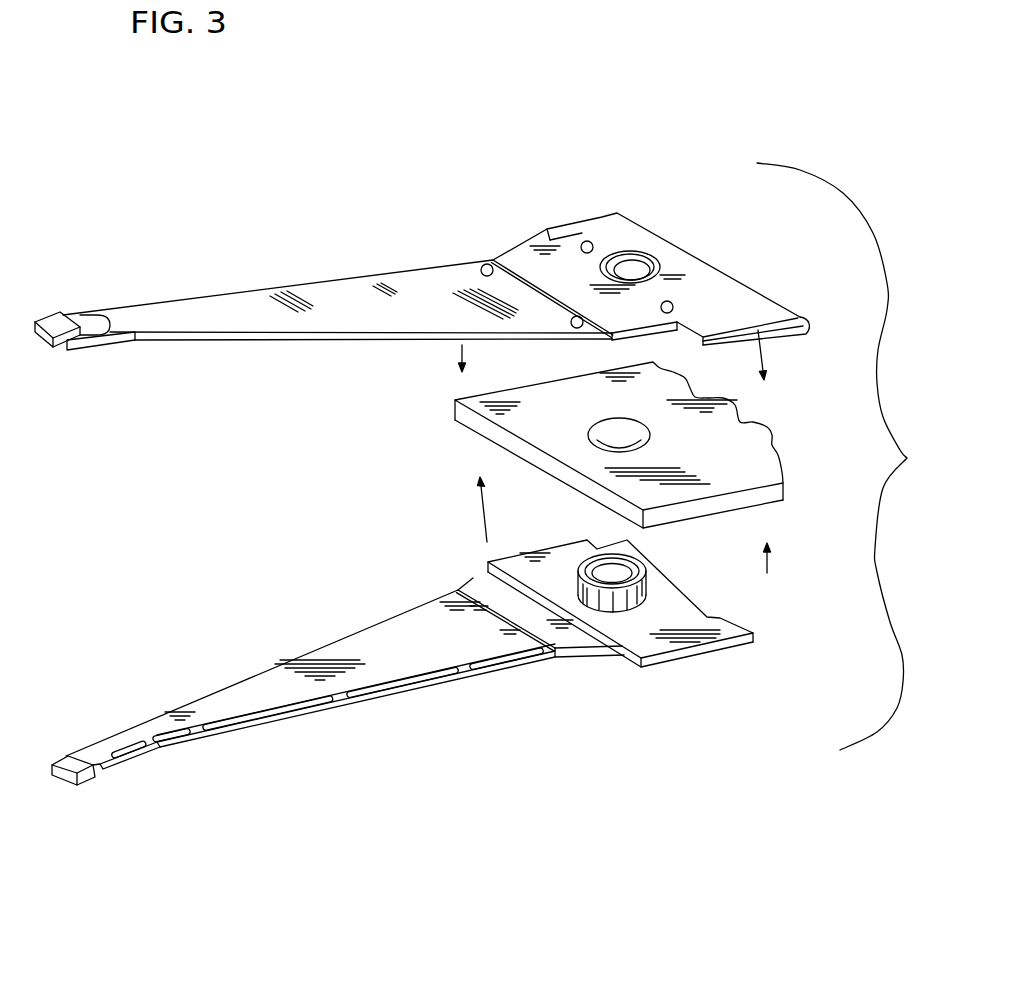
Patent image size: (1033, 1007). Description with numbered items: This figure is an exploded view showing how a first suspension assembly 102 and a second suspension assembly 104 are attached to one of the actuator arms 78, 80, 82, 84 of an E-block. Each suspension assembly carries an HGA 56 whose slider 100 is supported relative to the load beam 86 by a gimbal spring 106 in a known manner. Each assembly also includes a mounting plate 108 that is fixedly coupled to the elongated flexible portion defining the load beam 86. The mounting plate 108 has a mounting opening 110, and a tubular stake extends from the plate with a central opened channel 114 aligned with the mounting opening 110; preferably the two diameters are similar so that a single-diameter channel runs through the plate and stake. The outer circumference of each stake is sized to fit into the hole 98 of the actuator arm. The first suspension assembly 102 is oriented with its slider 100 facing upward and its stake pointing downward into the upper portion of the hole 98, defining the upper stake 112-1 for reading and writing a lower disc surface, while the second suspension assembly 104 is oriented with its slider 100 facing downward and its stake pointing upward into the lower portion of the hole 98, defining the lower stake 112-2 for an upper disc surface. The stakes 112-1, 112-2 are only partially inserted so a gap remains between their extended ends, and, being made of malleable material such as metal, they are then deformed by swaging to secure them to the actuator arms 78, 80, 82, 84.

The first suspension assembly 102 is at (378, 248).
The second suspension assembly 104 is at (333, 625).
The HGA 56 is at (92, 275).
The slider 100 is at (57, 313).
The gimbal spring 106 is at (98, 325).
The load beam 86 is at (272, 290).
The mounting plate 108 is at (567, 257).
The mounting opening 110 is at (647, 250).
The upper stake 112-1 is at (667, 270).
The lower stake 112-2 is at (648, 575).
The central opened channel 114 is at (625, 562).
The hole 98 is at (630, 440).
The actuator arm 78 is at (664, 445).
The actuator arm 80 is at (664, 445).
The actuator arm 82 is at (664, 445).
The actuator arm 84 is at (763, 475).